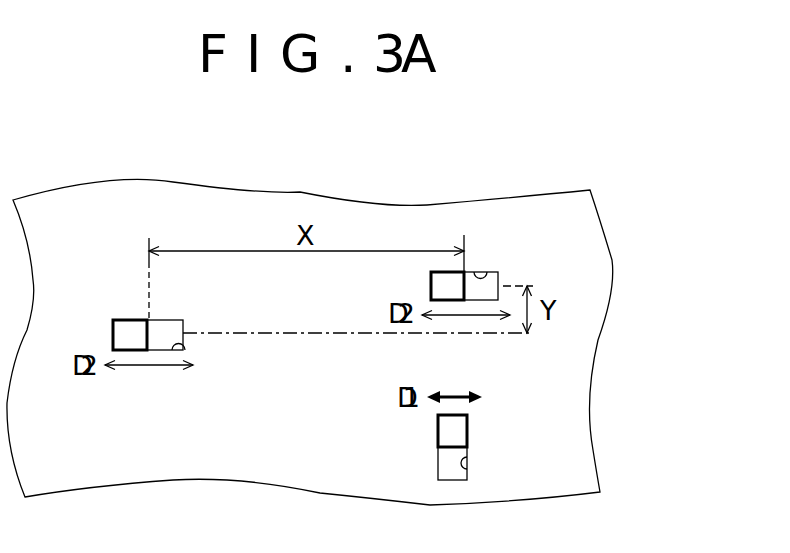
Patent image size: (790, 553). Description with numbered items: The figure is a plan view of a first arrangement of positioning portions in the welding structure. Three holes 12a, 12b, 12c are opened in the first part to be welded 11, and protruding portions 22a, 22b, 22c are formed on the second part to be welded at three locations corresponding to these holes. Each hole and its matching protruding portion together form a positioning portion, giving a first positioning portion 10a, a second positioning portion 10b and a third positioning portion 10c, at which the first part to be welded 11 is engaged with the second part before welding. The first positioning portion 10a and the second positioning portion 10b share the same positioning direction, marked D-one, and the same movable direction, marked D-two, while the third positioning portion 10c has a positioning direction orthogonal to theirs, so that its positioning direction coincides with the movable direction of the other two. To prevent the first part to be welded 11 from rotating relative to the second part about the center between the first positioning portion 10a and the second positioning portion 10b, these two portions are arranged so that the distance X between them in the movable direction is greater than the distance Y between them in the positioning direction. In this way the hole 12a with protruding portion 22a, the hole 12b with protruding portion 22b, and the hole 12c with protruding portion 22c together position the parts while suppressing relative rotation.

The first part to be welded 11 is at (117, 458).
The first positioning portion 10a is at (161, 304).
The hole 12a is at (183, 349).
The protruding portion 22a is at (150, 333).
The second positioning portion 10b is at (494, 243).
The hole 12b is at (521, 265).
The protruding portion 22b is at (463, 283).
The third positioning portion 10c is at (454, 438).
The hole 12c is at (467, 463).
The protruding portion 22c is at (453, 447).